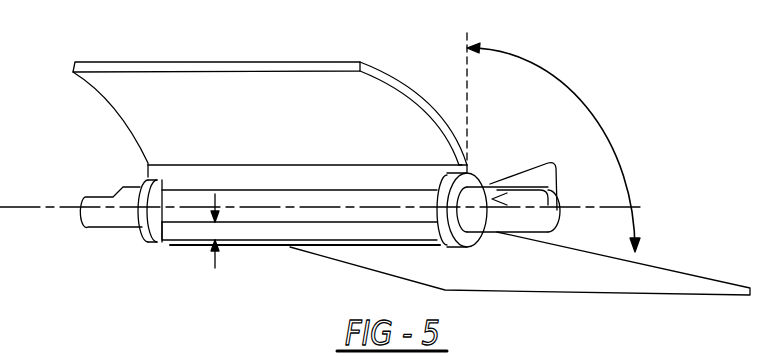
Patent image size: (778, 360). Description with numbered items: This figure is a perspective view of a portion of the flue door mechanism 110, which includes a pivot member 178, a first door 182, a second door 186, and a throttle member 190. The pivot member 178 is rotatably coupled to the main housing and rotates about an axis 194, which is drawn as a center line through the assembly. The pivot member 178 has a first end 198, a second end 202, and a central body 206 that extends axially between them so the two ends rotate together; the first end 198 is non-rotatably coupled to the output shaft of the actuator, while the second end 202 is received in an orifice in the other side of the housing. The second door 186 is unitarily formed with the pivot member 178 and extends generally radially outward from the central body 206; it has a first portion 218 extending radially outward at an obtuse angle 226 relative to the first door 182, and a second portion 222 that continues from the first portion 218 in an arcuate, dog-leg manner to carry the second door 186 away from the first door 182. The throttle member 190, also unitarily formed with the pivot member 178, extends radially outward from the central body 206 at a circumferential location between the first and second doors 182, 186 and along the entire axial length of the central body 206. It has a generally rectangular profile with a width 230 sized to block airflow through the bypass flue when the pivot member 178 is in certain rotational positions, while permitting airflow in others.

The flue door mechanism 110 is at (264, 63).
The pivot member 178 is at (131, 180).
The first door 182 is at (670, 263).
The second door 186 is at (200, 71).
The throttle member 190 is at (249, 242).
The axis 194 is at (40, 207).
The first end 198 is at (503, 217).
The second end 202 is at (113, 220).
The central body 206 is at (255, 197).
The first portion 218 is at (369, 178).
The second portion 222 is at (412, 82).
The obtuse angle 226 is at (597, 125).
The width 230 is at (214, 258).